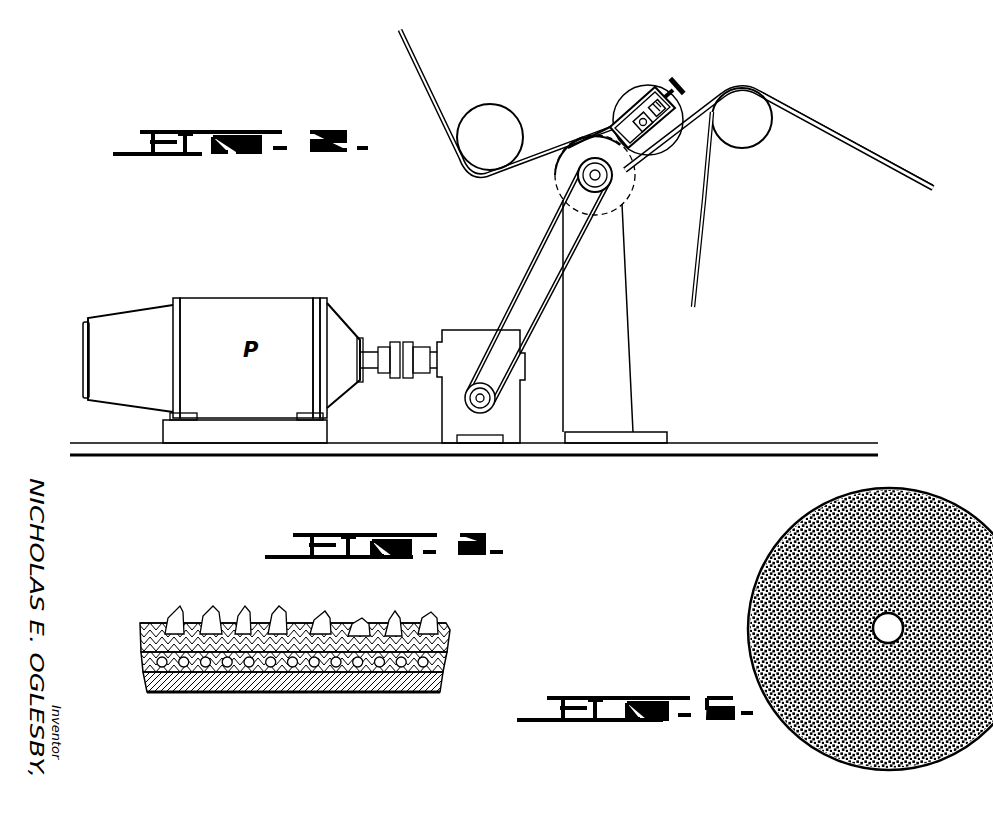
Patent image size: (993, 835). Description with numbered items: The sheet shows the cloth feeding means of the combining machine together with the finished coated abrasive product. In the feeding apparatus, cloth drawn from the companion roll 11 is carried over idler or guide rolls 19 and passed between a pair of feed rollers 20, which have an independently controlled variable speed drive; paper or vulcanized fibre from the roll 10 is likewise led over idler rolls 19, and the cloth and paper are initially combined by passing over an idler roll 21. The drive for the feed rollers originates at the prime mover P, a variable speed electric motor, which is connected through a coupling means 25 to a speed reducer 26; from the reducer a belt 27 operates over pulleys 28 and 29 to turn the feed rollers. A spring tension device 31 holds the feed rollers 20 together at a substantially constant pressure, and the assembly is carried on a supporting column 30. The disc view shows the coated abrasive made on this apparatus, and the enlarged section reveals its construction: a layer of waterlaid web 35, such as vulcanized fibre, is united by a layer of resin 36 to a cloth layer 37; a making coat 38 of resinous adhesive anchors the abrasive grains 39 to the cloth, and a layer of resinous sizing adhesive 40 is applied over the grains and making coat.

In FIG. 2, the roll of backing material 10 is at (701, 268).
In FIG. 2, the companion roll 11 is at (410, 53).
In FIG. 2, the idler rolls 19 is at (505, 112).
In FIG. 2, the feed rollers 20 is at (583, 148).
In FIG. 2, the idler roll 21 is at (768, 136).
In FIG. 2, the coupling means 25 is at (396, 342).
In FIG. 2, the speed reducer 26 is at (455, 330).
In FIG. 2, the belt 27 is at (531, 259).
In FIG. 2, the pulley 28 is at (466, 400).
In FIG. 2, the pulley 29 is at (621, 200).
In FIG. 2, the support column 30 is at (628, 366).
In FIG. 2, the spring tension device 31 is at (664, 88).
In FIG. 6, the layer of waterlaid web 35 is at (324, 657).
In FIG. 6, the layer of resin 36 is at (440, 674).
In FIG. 6, the cloth layer 37 is at (428, 663).
In FIG. 6, the making coat 38 is at (450, 647).
In FIG. 6, the abrasive grains 39 is at (407, 612).
In FIG. 5, the abrasive grains 39 is at (753, 647).
In FIG. 6, the layer of resinous sizing adhesive 40 is at (440, 630).
In FIG. 5, the layer of resinous sizing adhesive 40 is at (752, 590).